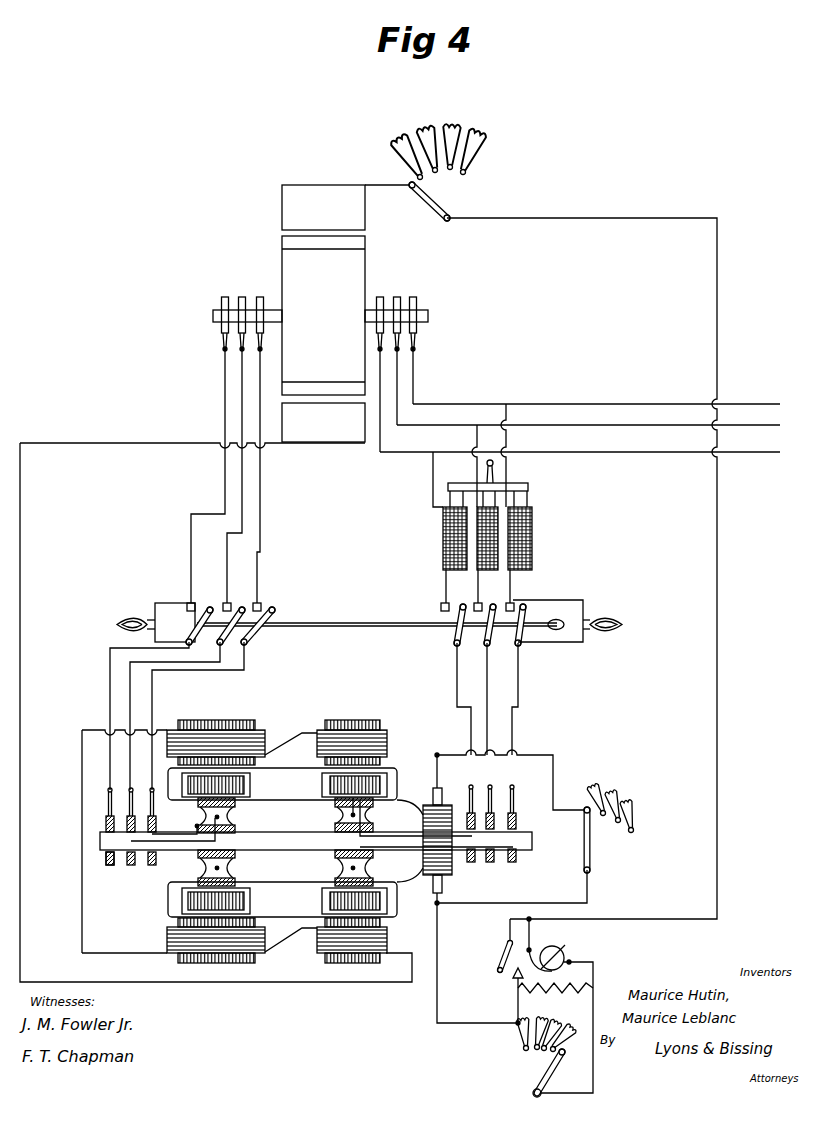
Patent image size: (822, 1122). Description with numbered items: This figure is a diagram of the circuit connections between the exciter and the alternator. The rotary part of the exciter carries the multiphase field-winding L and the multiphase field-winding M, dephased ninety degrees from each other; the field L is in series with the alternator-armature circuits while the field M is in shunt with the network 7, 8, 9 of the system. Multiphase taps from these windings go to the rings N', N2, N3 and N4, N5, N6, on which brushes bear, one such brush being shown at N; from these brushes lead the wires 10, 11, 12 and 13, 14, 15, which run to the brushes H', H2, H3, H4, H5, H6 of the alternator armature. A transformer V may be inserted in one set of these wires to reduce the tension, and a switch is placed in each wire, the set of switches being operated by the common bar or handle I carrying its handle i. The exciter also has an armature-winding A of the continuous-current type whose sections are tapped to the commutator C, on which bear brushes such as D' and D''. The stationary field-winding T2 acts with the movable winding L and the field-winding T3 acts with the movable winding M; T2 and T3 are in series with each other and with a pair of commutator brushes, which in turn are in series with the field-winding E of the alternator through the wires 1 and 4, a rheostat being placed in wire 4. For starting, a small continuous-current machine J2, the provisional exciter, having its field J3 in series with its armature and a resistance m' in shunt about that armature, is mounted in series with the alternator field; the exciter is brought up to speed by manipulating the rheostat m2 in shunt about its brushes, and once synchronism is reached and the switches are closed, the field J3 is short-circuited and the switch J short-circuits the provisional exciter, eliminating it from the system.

The wire 1 is at (20, 680).
The field-winding of the alternator E is at (323, 313).
The multiphase field-winding M is at (312, 816).
The brush H5 is at (221, 298).
The brush H6 is at (242, 297).
The brush H4 is at (268, 436).
The brush H' is at (385, 363).
The brush H2 is at (397, 297).
The brush H3 is at (413, 297).
The network conductor 7 is at (596, 394).
The network conductor 8 is at (588, 436).
The network conductor 9 is at (580, 463).
The wire 4 is at (588, 568).
The transformer V is at (565, 528).
The wire 13 is at (434, 590).
The wire 14 is at (472, 590).
The wire 15 is at (504, 590).
The wire 10 is at (250, 588).
The wire 11 is at (181, 588).
The wire 12 is at (218, 588).
The switch handle i is at (357, 633).
The common bar or handle I is at (548, 621).
The field-winding T2 is at (242, 853).
The field-winding T3 is at (352, 853).
The armature-winding A is at (295, 842).
The multiphase field-winding L is at (240, 800).
The ring N2 is at (101, 824).
The brush N is at (131, 826).
The ring N' is at (161, 826).
The ring N3 is at (121, 866).
The ring N4 is at (467, 836).
The ring N5 is at (492, 834).
The ring N6 is at (512, 834).
The commutator C is at (450, 878).
The brush D' is at (448, 779).
The bearing D'' is at (465, 949).
The rheostat m2 is at (600, 778).
The switch J is at (496, 946).
The continuous-current machine J2 is at (560, 951).
The field J3 is at (586, 981).
The resistance m' is at (546, 1051).